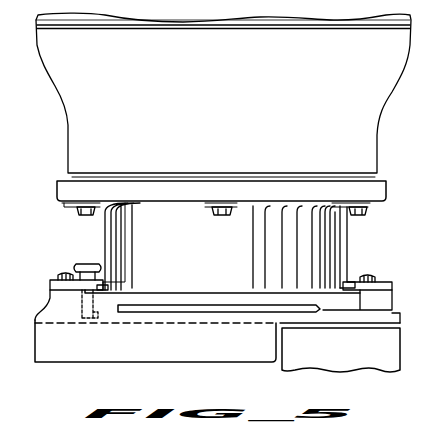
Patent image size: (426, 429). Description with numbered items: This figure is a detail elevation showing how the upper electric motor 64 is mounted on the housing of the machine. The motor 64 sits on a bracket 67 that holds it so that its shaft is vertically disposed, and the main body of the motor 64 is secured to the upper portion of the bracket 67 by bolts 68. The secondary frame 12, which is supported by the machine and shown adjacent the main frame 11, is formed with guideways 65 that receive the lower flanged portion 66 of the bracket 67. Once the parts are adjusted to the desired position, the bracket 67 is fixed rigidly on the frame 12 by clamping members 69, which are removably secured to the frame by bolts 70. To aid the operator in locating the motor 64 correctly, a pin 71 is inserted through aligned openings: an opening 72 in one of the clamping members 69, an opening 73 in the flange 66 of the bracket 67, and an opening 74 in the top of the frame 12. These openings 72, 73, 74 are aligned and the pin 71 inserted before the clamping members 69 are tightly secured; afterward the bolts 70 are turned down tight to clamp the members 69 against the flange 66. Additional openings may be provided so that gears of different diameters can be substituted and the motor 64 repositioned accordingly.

The electric motor 64 is at (236, 102).
The bracket 67 is at (226, 259).
The bolts 68 is at (88, 215).
The clamping members 69 is at (50, 284).
The bolts 70 is at (64, 270).
The pin 71 is at (89, 265).
The opening 72 is at (123, 282).
The opening 73 is at (95, 300).
The opening 74 is at (99, 314).
The guideways 65 is at (78, 292).
The lower flanged portion 66 is at (186, 304).
The secondary frame 12 is at (57, 330).
The main frame 11 is at (380, 352).